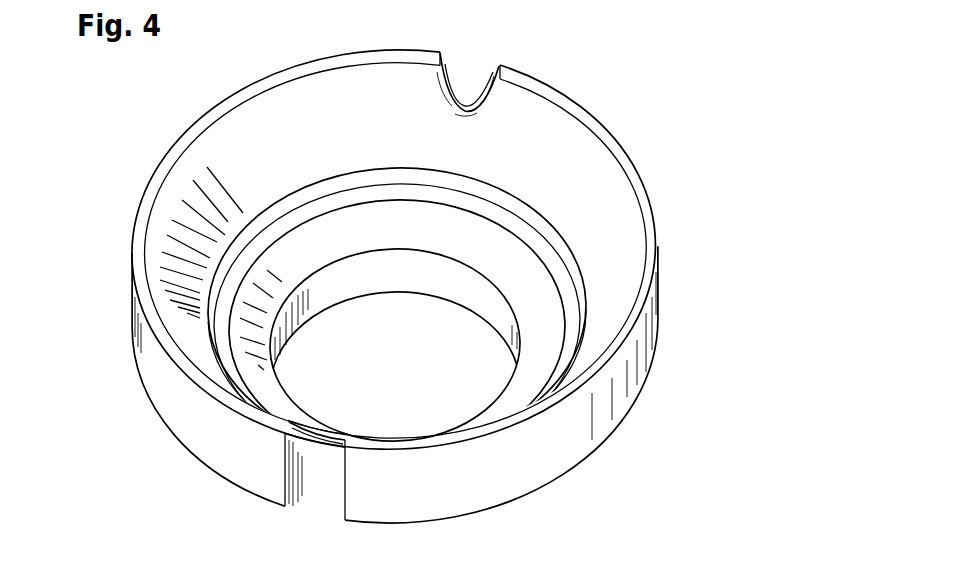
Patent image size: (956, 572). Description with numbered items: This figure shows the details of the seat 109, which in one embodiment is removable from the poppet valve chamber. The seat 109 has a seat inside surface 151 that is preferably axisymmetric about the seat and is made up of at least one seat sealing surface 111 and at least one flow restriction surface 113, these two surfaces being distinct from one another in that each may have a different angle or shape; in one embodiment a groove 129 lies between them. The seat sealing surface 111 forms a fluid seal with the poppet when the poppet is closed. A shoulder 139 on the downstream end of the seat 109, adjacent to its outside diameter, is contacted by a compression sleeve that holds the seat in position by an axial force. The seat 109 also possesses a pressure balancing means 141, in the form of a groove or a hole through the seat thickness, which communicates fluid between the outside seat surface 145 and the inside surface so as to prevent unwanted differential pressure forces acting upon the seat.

The seat 109 is at (686, 50).
The shoulder 139 is at (627, 172).
The pressure balancing means 141 is at (447, 78).
The outside seat surface 145 is at (618, 395).
The flow restriction surface 113 is at (187, 208).
The seat inside surface 151 is at (364, 163).
The groove 129 is at (218, 348).
The seat sealing surface 111 is at (533, 290).